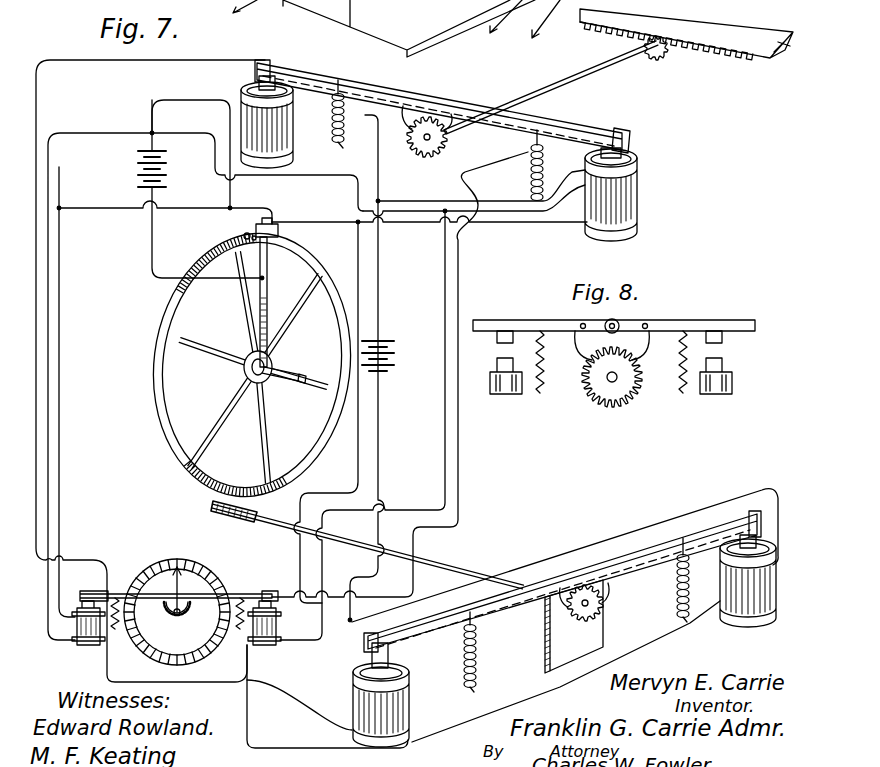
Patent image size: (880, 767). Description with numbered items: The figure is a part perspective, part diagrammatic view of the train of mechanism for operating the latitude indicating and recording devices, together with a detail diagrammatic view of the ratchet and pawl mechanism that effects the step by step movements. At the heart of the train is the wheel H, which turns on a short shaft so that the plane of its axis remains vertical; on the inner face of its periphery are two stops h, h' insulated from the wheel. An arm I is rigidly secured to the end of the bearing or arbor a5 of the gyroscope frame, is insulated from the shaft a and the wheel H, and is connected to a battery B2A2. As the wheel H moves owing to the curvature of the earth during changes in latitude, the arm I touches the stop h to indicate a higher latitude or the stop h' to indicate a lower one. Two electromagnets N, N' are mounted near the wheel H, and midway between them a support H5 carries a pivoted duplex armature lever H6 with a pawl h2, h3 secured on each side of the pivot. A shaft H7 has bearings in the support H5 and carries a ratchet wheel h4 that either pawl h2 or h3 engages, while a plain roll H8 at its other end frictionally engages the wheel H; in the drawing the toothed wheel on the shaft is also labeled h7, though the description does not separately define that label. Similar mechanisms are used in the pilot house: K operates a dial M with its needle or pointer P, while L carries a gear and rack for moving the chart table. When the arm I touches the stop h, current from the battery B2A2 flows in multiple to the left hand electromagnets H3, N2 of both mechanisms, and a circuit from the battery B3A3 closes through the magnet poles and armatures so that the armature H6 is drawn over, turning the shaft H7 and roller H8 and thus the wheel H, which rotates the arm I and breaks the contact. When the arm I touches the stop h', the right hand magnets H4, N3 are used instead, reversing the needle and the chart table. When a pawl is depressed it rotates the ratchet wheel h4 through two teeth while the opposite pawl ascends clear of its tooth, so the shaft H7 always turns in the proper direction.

In FIG. 7, the shaft a is at (688, 22).
In FIG. 7, the chart table operating mechanism L is at (614, 116).
In FIG. 7, the shaft H7 is at (561, 88).
In FIG. 8, the shaft H7 is at (608, 383).
In FIG. 7, the duplex armature lever H6 is at (440, 647).
In FIG. 8, the duplex armature lever H6 is at (614, 312).
In FIG. 7, the pawl h3 is at (543, 619).
In FIG. 8, the pawl h3 is at (578, 363).
In FIG. 7, the pawl h2 is at (630, 587).
In FIG. 8, the pawl h2 is at (646, 363).
In FIG. 7, the gear wheel h7 is at (505, 369).
In FIG. 7, the ratchet wheel h4 is at (436, 153).
In FIG. 8, the ratchet wheel h4 is at (664, 377).
In FIG. 7, the left hand electromagnet H3 is at (276, 126).
In FIG. 8, the left hand electromagnet H3 is at (510, 397).
In FIG. 7, the right hand electromagnet H4 is at (638, 199).
In FIG. 8, the right hand electromagnet H4 is at (720, 397).
In FIG. 7, the support H5 is at (567, 643).
In FIG. 7, the plain wheel or roll H8 is at (230, 512).
In FIG. 7, the wheel H is at (337, 292).
In FIG. 7, the dial operating mechanism K is at (112, 447).
In FIG. 7, the arm I is at (268, 300).
In FIG. 7, the stop h is at (279, 220).
In FIG. 7, the stop h' is at (227, 233).
In FIG. 7, the bearing or arbor a5 is at (285, 373).
In FIG. 7, the battery B2A2 is at (201, 190).
In FIG. 7, the battery B3A3 is at (399, 356).
In FIG. 7, the electromagnet N is at (393, 695).
In FIG. 7, the electromagnet N' is at (760, 581).
In FIG. 7, the left hand electromagnet N2 is at (78, 634).
In FIG. 7, the right hand electromagnet N3 is at (262, 645).
In FIG. 7, the dial M is at (177, 612).
In FIG. 7, the needle or pointer P is at (179, 591).
In FIG. 7, the west contact spring W is at (114, 624).
In FIG. 7, the east contact spring E' is at (235, 624).